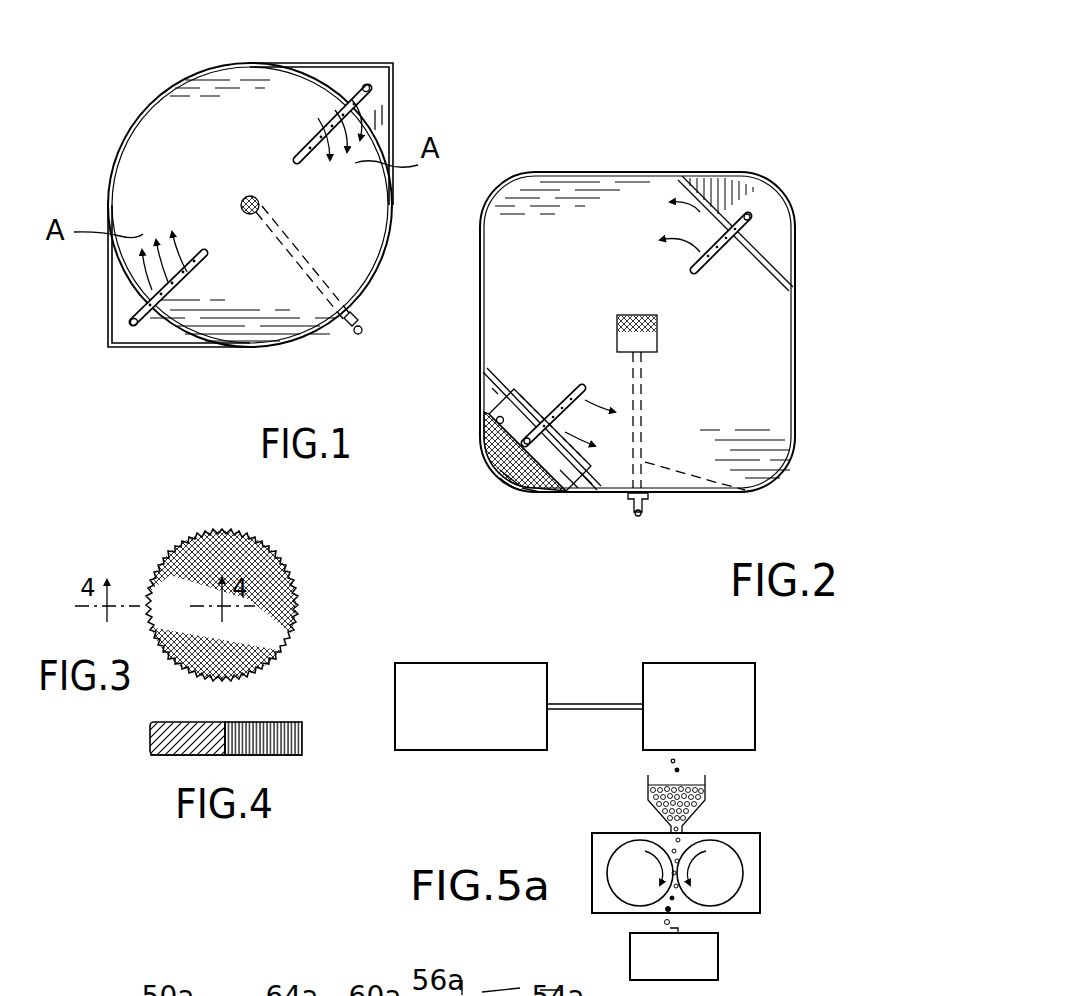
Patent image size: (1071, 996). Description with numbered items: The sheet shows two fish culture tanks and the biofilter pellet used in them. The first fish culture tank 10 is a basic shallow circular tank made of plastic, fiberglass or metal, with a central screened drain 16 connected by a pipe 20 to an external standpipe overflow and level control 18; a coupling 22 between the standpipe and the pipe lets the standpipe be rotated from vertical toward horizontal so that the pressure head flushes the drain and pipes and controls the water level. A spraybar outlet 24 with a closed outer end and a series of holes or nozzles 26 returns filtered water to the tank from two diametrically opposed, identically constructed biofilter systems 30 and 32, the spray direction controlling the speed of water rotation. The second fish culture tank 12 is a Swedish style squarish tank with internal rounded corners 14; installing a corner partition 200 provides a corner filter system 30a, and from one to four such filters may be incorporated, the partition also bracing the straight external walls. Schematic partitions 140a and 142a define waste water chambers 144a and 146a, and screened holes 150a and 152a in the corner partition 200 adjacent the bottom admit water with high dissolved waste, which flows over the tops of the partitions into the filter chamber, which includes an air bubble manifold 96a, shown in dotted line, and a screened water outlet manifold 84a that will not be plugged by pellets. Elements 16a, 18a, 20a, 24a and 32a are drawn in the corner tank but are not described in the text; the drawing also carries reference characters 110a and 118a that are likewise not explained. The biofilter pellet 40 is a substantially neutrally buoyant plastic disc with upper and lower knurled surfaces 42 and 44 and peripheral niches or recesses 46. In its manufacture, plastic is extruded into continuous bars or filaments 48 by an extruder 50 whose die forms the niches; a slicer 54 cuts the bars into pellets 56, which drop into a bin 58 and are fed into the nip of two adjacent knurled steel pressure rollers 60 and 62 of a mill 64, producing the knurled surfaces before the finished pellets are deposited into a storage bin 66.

In FIG. 1, the fish culture tank 10 is at (160, 82).
In FIG. 2, the fish culture tank 12 is at (548, 175).
In FIG. 2, the rounded corners 14 is at (748, 176).
In FIG. 1, the central screened drain 16 is at (240, 205).
In FIG. 2, the drive block 16a is at (660, 340).
In FIG. 1, the standpipe overflow and level control 18 is at (362, 334).
In FIG. 2, the drain valve 18a is at (645, 512).
In FIG. 1, the pipe 20 is at (345, 290).
In FIG. 2, the liquid level 20a is at (760, 494).
In FIG. 1, the coupling 22 is at (348, 330).
In FIG. 1, the spraybar outlet 24 is at (308, 150).
In FIG. 2, the spray bar 24a is at (585, 384).
In FIG. 1, the holes or nozzles 26 is at (358, 104).
In FIG. 1, the biofilter system 30 is at (125, 355).
In FIG. 2, the filter system 30a is at (530, 495).
In FIG. 1, the biofilter system 32 is at (370, 60).
In FIG. 2, the upper baffle 32a is at (798, 232).
In FIG. 2, the corner partition 200 is at (770, 268).
In FIG. 3, the biofilter pellet 40 is at (290, 565).
In FIG. 5A, the biofilter pellet 40 is at (672, 922).
In FIG. 3, the upper knurled surface 42 is at (168, 562).
In FIG. 4, the upper knurled surface 42 is at (168, 722).
In FIG. 4, the lower knurled surface 44 is at (170, 756).
In FIG. 3, the peripheral niches or recesses 46 is at (300, 640).
In FIG. 4, the peripheral niches or recesses 46 is at (295, 740).
In FIG. 5A, the bars or filaments 48 is at (594, 703).
In FIG. 5A, the extruder 50 is at (527, 663).
In FIG. 5A, the slicer 54 is at (710, 663).
In FIG. 5A, the pellets 56 is at (688, 752).
In FIG. 5A, the bin 58 is at (648, 787).
In FIG. 5A, the steel pressure roller 60 is at (625, 860).
In FIG. 5A, the steel pressure roller 62 is at (730, 860).
In FIG. 5A, the mill 64 is at (592, 858).
In FIG. 5A, the storage bin 66 is at (710, 968).
In FIG. 2, the screened water outlet manifold 84a is at (505, 475).
In FIG. 2, the air bubble manifold 96a is at (525, 510).
In FIG. 2, the filter media 110a is at (485, 440).
In FIG. 2, the inlet port 118a is at (495, 462).
In FIG. 2, the partition 140a is at (492, 410).
In FIG. 2, the partition 142a is at (560, 495).
In FIG. 2, the waste water chamber 144a is at (490, 396).
In FIG. 2, the waste water chamber 146a is at (575, 495).
In FIG. 2, the screened hole 150a is at (570, 400).
In FIG. 2, the screened hole 152a is at (600, 470).